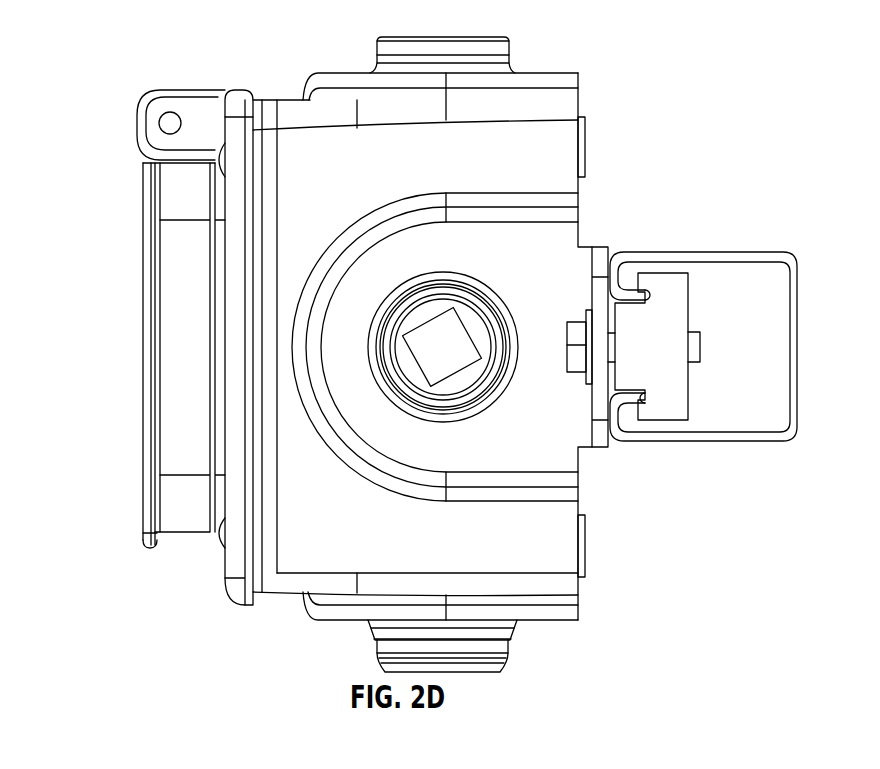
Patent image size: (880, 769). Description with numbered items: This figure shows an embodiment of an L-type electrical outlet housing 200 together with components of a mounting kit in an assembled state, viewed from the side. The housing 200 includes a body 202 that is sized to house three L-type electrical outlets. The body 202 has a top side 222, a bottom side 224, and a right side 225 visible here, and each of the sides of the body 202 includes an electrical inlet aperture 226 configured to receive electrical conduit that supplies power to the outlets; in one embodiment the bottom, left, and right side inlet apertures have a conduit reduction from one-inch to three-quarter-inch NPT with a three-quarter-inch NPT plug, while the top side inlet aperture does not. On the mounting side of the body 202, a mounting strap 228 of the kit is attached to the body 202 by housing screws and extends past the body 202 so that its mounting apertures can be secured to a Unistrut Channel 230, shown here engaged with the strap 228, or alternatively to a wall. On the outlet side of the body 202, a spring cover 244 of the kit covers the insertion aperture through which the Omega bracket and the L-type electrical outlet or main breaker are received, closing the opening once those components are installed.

The L-type electrical outlet housing 200 is at (101, 28).
The body 202 is at (565, 137).
The top side 222 is at (538, 73).
The bottom side 224 is at (555, 617).
The right side 225 is at (340, 527).
The electrical inlet aperture 226 is at (468, 36).
The mounting strap 228 is at (666, 352).
The Unistrut Channel 230 is at (722, 252).
The spring cover 244 is at (168, 350).